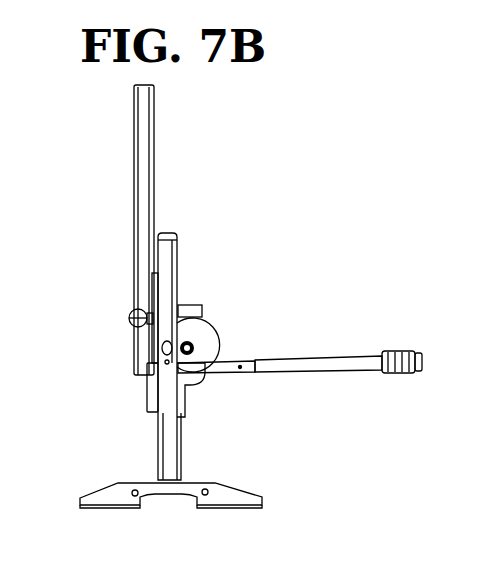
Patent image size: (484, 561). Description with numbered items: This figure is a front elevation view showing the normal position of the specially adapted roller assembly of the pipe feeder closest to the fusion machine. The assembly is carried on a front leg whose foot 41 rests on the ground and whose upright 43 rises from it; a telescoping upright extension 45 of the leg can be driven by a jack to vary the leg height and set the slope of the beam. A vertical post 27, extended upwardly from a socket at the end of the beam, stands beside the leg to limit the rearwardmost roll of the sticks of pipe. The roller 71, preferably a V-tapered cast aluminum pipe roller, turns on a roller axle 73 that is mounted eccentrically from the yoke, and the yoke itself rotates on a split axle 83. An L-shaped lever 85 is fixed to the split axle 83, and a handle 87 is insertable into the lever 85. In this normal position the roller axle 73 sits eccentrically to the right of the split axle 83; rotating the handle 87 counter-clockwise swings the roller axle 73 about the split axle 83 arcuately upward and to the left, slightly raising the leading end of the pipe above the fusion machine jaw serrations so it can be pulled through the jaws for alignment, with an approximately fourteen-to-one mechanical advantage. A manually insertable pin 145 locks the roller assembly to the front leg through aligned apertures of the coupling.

The vertical post 27 is at (154, 150).
The foot 41 is at (120, 482).
The upright 43 is at (183, 480).
The telescoping upright extension 45 is at (182, 450).
The roller 71 is at (218, 333).
The roller axle 73 is at (193, 345).
The split axle 83 is at (162, 344).
The L-shaped lever 85 is at (240, 374).
The handle 87 is at (312, 358).
The pin 145 is at (130, 315).